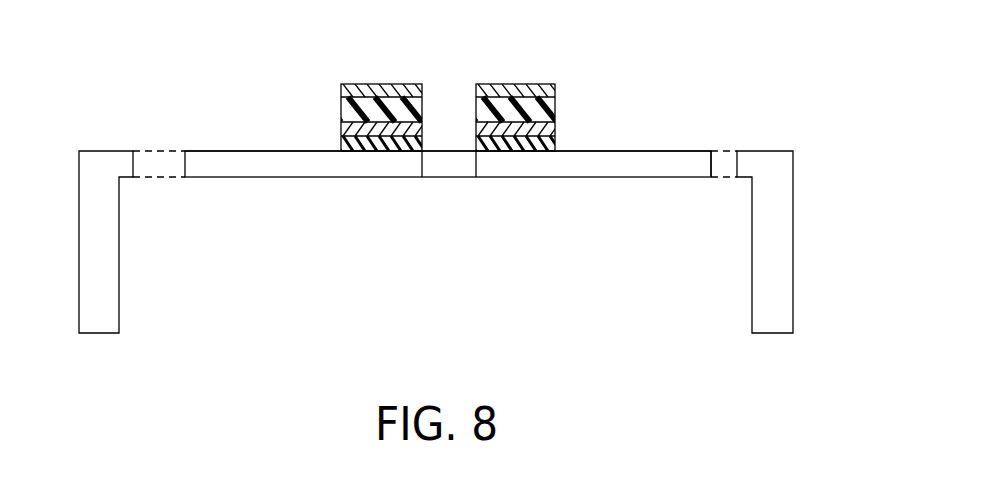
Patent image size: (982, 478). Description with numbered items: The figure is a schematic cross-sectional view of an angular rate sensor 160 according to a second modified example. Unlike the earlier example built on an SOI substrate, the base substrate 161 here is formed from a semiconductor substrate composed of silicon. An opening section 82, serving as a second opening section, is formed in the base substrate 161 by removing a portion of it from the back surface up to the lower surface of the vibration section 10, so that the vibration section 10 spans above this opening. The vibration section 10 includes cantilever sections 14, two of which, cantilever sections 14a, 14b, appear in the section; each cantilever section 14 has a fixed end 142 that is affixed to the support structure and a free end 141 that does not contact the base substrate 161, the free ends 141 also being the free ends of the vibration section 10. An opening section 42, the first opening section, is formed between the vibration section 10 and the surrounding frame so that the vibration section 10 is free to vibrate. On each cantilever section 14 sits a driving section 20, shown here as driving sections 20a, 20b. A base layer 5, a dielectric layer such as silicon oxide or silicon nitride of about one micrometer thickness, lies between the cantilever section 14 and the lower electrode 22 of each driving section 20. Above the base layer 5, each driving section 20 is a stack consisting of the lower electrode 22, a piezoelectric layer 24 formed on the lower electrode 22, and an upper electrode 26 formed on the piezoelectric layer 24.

The angular rate sensor 160 is at (794, 60).
The base substrate 161 is at (113, 250).
The opening section 42 is at (158, 158).
The opening section 82 is at (464, 252).
The cantilever sections 14 is at (445, 161).
The cantilever section 14a is at (258, 163).
The cantilever section 14b is at (638, 160).
The fixed end 142 is at (477, 162).
The free end 141 is at (709, 161).
The vibration section 10 is at (443, 142).
The driving sections 20 is at (447, 103).
The driving section 20a is at (250, 55).
The driving section 20b is at (643, 55).
The upper electrode for driving section 26 is at (341, 90).
The piezoelectric layer for driving section 24 is at (341, 110).
The lower electrode for driving section 22 is at (341, 128).
The base layer 5 is at (341, 143).